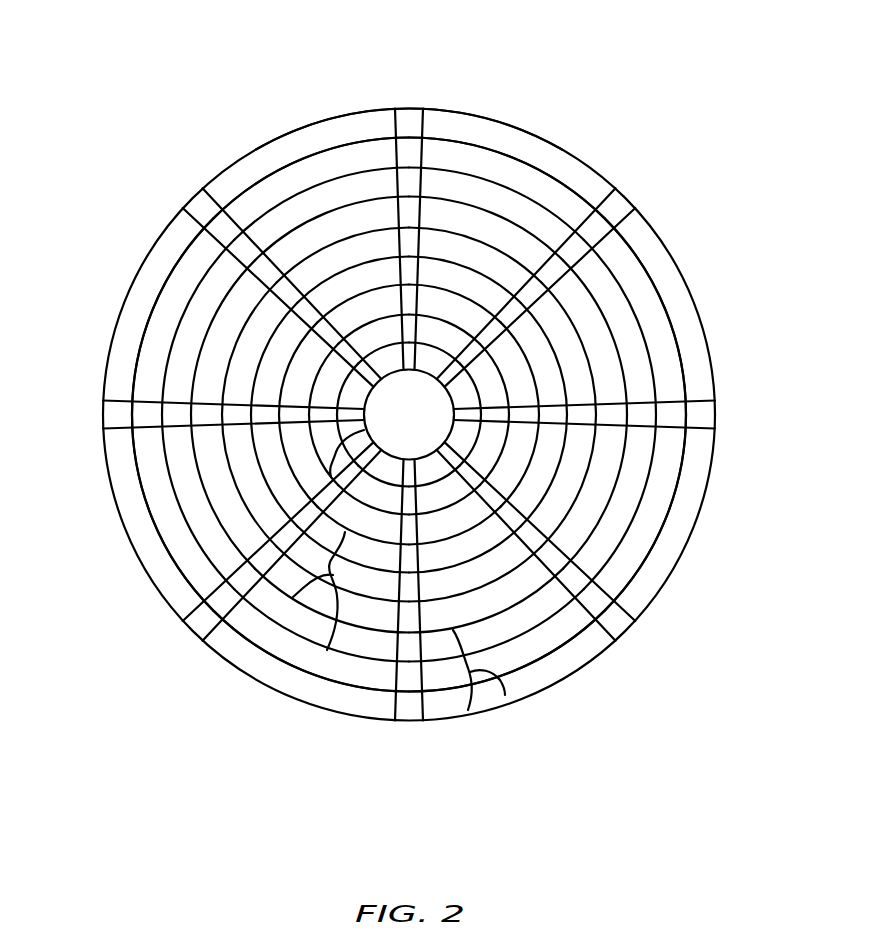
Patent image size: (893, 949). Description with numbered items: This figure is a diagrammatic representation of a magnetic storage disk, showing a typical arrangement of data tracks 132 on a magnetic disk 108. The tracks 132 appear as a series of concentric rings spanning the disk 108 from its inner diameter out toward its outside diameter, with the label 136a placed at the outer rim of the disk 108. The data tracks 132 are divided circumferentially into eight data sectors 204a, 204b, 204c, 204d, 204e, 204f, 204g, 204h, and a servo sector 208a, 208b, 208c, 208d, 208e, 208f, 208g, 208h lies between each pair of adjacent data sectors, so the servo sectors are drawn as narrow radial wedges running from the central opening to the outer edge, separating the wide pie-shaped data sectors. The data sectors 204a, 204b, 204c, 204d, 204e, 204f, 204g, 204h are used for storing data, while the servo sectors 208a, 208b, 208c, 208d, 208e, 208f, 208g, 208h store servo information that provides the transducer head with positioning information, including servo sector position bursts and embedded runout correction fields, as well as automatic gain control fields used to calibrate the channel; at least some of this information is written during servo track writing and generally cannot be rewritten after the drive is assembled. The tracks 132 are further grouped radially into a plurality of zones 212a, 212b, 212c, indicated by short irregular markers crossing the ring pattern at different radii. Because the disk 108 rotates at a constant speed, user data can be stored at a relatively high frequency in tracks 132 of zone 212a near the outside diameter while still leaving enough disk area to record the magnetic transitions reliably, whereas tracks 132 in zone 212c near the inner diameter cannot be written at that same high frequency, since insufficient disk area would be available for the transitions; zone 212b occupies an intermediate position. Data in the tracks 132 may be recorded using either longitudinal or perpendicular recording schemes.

The magnetic disk 108 is at (372, 108).
The outer edge region 136a is at (337, 122).
The data tracks 132 is at (510, 152).
The data sector 204a is at (480, 115).
The data sector 204b is at (670, 250).
The data sector 204c is at (693, 540).
The data sector 204d is at (568, 673).
The data sector 204e is at (240, 672).
The data sector 204f is at (130, 530).
The data sector 204g is at (110, 343).
The data sector 204h is at (302, 127).
The servo sector 208a is at (416, 107).
The servo sector 208b is at (630, 205).
The servo sector 208c is at (717, 417).
The servo sector 208d is at (628, 632).
The servo sector 208e is at (411, 721).
The servo sector 208f is at (197, 622).
The servo sector 208g is at (108, 414).
The servo sector 208h is at (193, 192).
The zone 212a is at (505, 695).
The zone 212b is at (327, 650).
The zone 212c is at (334, 451).